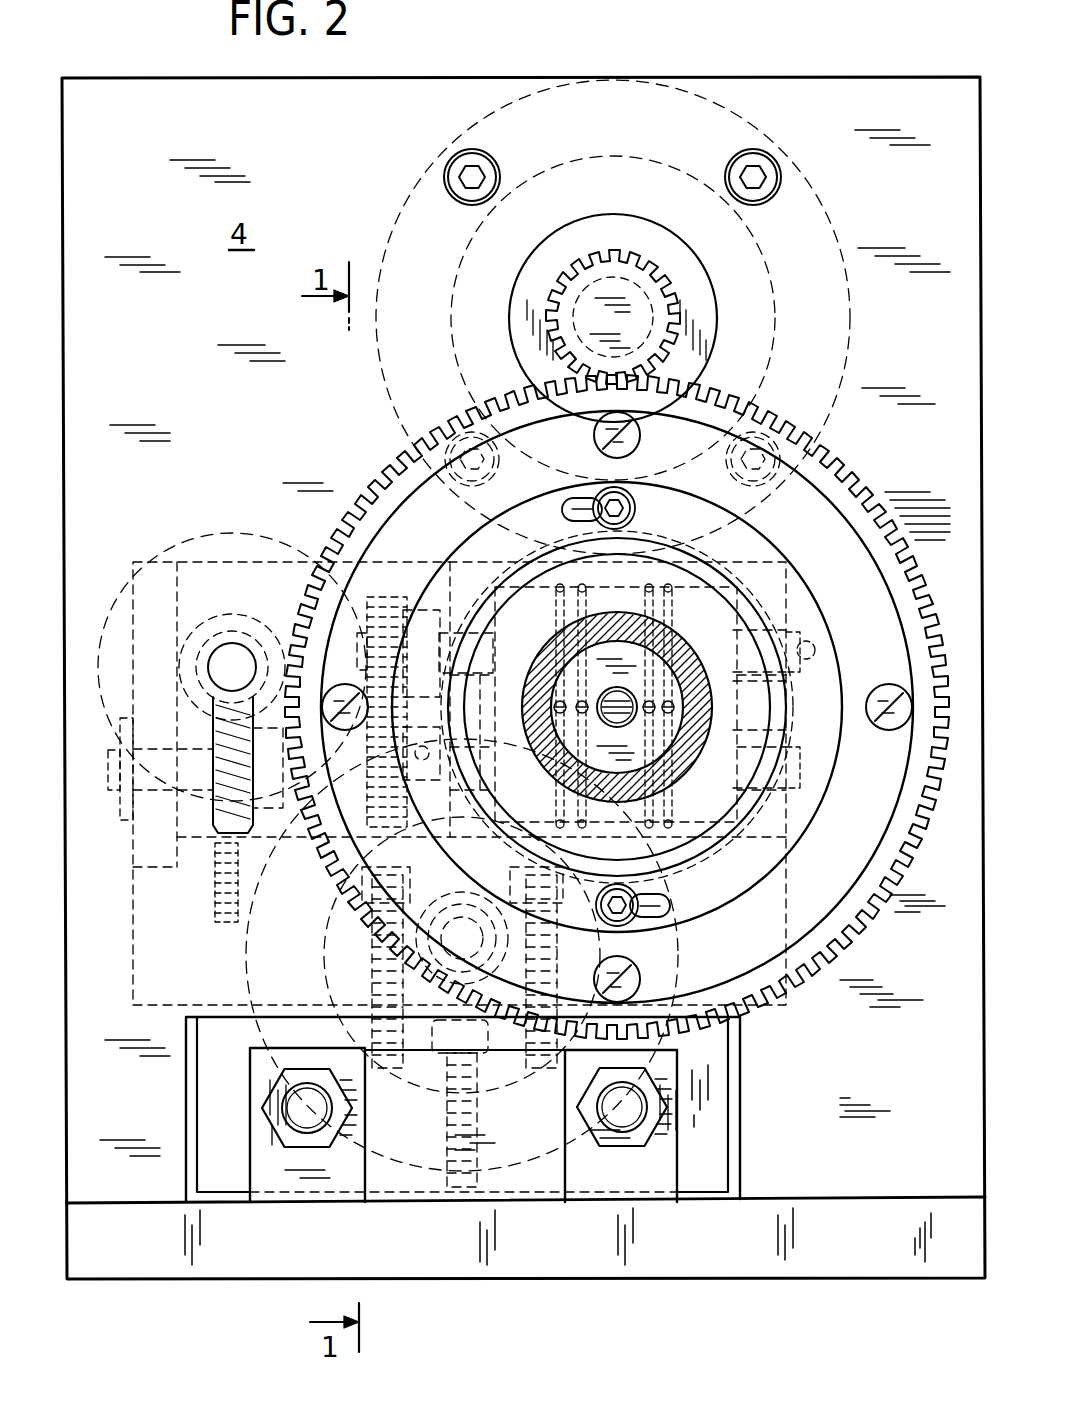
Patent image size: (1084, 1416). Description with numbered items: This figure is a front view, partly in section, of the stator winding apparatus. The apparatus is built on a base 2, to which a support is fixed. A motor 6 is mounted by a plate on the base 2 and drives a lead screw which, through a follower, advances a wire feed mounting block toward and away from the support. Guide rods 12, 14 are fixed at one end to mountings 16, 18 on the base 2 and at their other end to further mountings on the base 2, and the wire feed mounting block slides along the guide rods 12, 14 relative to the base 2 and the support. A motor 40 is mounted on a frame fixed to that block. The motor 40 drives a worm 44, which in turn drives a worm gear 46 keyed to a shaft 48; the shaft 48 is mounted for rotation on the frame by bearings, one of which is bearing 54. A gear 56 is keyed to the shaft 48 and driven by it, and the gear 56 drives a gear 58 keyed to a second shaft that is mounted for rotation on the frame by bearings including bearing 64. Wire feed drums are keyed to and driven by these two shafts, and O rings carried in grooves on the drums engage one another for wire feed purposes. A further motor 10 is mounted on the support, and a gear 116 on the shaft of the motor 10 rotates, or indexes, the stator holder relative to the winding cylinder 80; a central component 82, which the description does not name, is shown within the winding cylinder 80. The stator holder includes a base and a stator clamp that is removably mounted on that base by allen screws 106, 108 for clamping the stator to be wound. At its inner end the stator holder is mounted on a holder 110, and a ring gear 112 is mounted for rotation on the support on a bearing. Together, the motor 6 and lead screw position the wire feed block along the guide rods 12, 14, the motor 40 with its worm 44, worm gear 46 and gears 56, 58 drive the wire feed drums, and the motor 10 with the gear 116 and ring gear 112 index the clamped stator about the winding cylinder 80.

The base 2 is at (560, 1262).
The motor 6 is at (252, 960).
The motor 10 is at (828, 216).
The guide rod 12 is at (612, 1104).
The guide rod 14 is at (297, 1112).
The mounting 16 is at (708, 1150).
The mounting 18 is at (278, 1187).
The motor 40 is at (225, 533).
The worm 44 is at (257, 622).
The worm gear 46 is at (213, 770).
The shaft 48 is at (150, 790).
The bearing 54 is at (795, 790).
The gear 56 is at (375, 868).
The gear 58 is at (385, 593).
The bearing 64 is at (795, 632).
The winding cylinder 80 is at (541, 658).
The central shaft disc 82 is at (637, 658).
The allen screw 106 is at (628, 510).
The allen screw 108 is at (628, 915).
The holder 110 is at (800, 522).
The ring gear 112 is at (400, 490).
The gear 116 is at (620, 263).